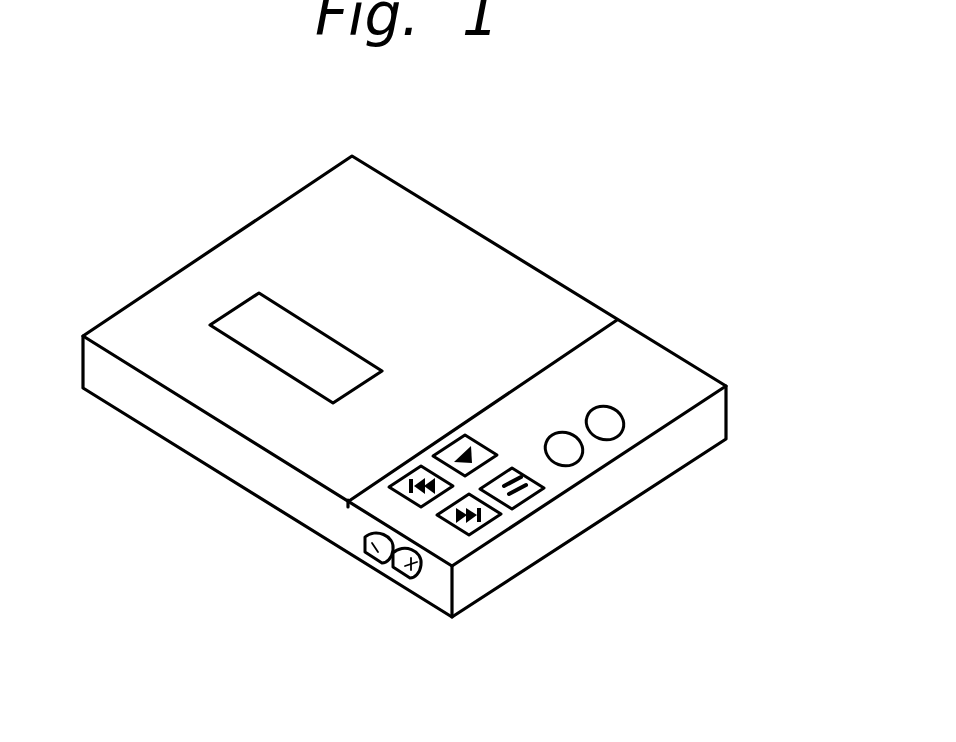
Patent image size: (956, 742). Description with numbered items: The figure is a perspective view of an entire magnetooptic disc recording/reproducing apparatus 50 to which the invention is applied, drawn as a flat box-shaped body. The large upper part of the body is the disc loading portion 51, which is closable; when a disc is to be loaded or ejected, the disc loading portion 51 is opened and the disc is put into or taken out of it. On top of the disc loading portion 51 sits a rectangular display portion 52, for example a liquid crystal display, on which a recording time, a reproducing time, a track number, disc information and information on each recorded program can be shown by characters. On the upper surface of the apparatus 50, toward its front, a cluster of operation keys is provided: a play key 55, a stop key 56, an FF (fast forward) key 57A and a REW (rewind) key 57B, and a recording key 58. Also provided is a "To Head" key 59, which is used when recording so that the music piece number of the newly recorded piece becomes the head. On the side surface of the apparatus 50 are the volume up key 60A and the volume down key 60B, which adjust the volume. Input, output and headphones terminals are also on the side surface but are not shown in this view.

The magnetooptic disc recording/reproducing apparatus 50 is at (555, 162).
The disc loading portion 51 is at (182, 378).
The display portion 52 is at (288, 351).
The play key 55 is at (467, 452).
The stop key 56 is at (523, 497).
The FF (fast forward) key 57A is at (474, 523).
The REW (rewind) key 57B is at (412, 485).
The recording key 58 is at (573, 452).
The "To Head" key 59 is at (612, 428).
The volume up key 60A is at (402, 575).
The volume down key 60B is at (377, 557).